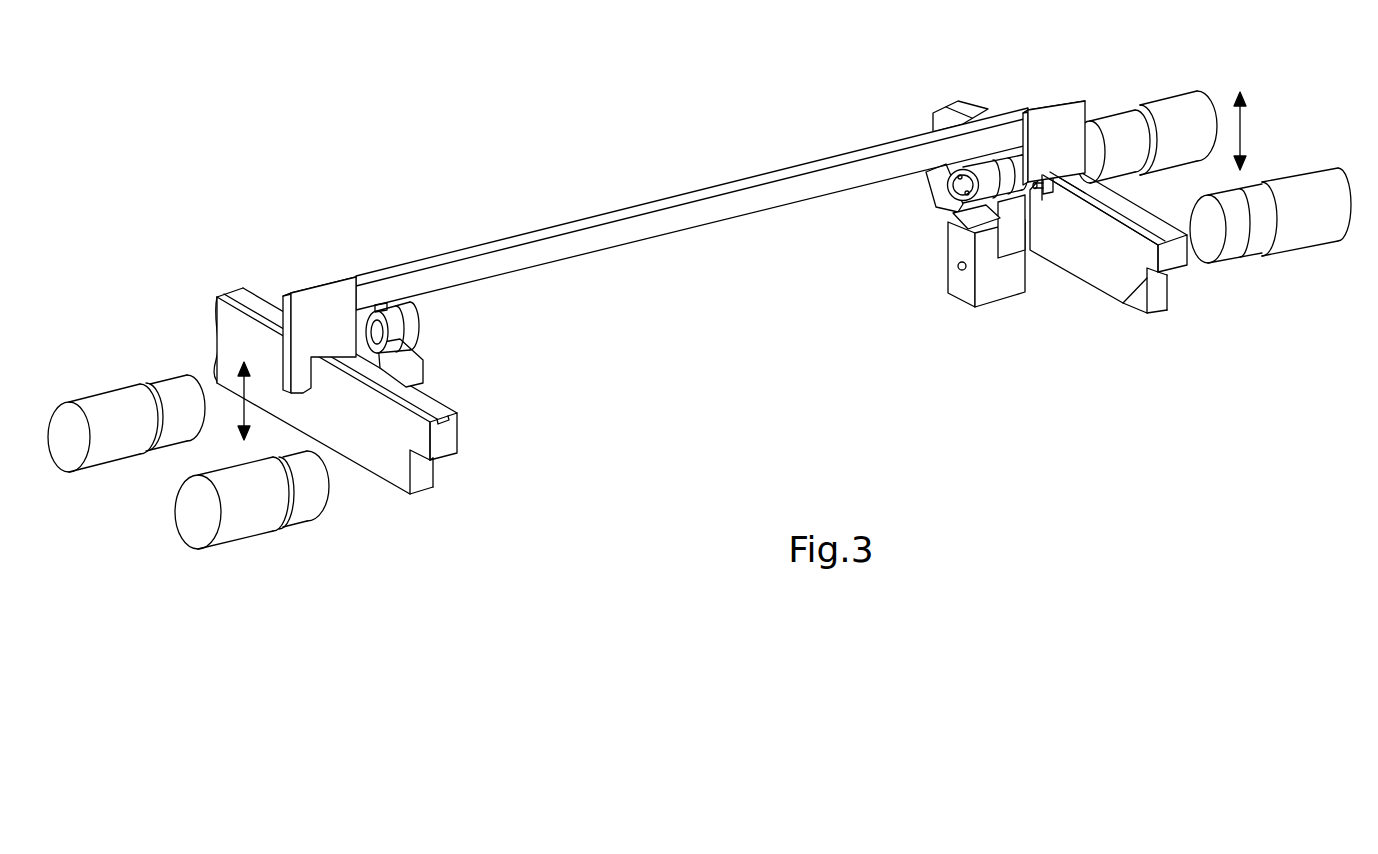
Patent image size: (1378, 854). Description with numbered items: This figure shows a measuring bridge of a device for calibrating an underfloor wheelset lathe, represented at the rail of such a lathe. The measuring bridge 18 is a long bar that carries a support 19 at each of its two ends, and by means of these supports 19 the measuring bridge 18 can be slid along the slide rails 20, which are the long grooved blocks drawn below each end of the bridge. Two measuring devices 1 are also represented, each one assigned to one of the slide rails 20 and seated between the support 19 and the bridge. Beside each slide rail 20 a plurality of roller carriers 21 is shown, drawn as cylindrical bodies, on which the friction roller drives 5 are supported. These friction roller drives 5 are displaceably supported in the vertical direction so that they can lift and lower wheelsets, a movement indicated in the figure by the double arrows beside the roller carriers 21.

The measuring device 1 is at (700, 298).
The friction roller drive 5 is at (167, 393).
The measuring bridge 18 is at (685, 200).
The support 19 is at (321, 308).
The slide rail 20 is at (385, 457).
The roller carrier 21 is at (106, 406).